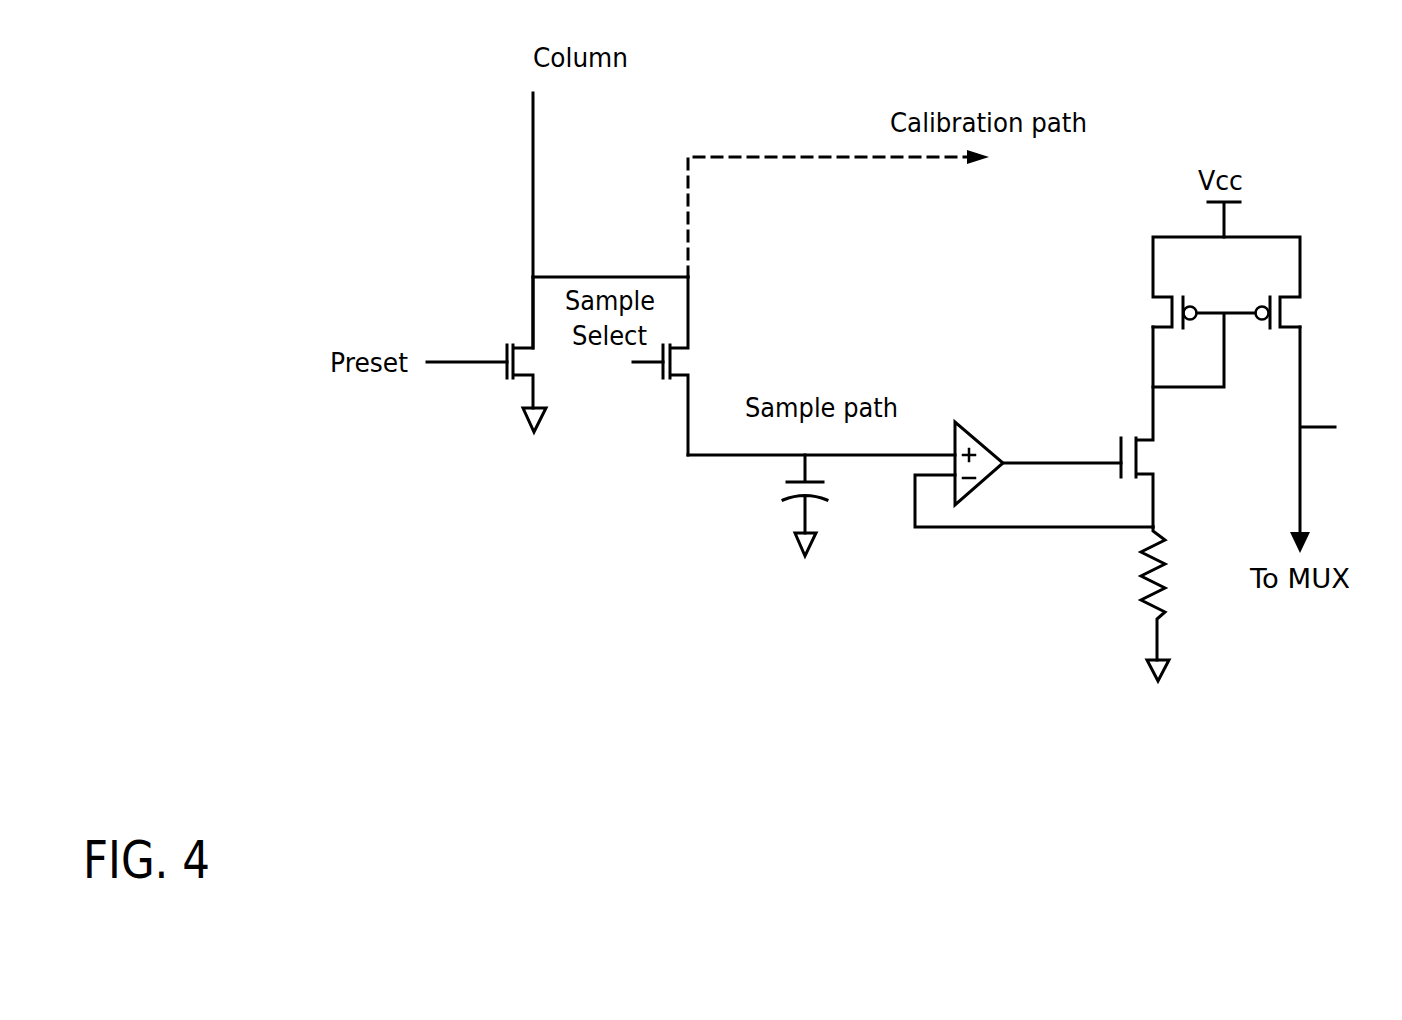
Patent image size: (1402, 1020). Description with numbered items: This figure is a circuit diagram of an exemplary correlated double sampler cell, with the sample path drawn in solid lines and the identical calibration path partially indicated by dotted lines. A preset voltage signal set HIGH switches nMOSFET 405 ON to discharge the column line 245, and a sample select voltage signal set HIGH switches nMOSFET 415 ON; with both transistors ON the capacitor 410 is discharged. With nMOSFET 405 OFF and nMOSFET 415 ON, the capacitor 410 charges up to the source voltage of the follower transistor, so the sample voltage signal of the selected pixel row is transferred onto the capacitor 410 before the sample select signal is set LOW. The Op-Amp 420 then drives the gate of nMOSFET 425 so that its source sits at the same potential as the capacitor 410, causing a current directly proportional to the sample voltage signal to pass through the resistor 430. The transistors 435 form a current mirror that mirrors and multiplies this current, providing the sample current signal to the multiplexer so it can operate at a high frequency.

The column line 245 is at (533, 138).
The nMOSFET 405 is at (518, 387).
The capacitor 410 is at (818, 512).
The nMOSFET 415 is at (680, 387).
The Op-Amp 420 is at (997, 458).
The nMOSFET 425 is at (1143, 430).
The resistor 430 is at (1145, 583).
The transistors (current mirror) 435 is at (1165, 313).